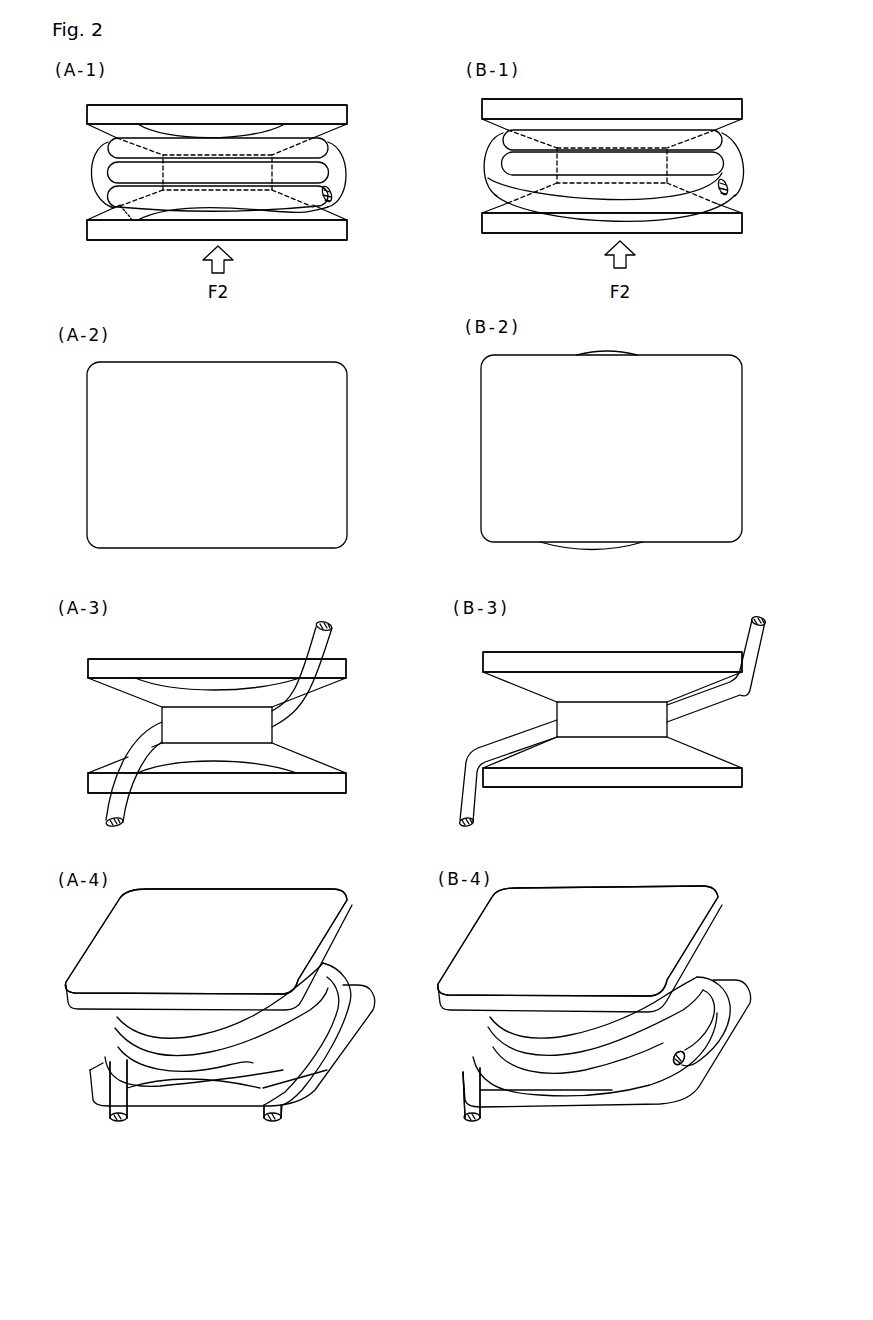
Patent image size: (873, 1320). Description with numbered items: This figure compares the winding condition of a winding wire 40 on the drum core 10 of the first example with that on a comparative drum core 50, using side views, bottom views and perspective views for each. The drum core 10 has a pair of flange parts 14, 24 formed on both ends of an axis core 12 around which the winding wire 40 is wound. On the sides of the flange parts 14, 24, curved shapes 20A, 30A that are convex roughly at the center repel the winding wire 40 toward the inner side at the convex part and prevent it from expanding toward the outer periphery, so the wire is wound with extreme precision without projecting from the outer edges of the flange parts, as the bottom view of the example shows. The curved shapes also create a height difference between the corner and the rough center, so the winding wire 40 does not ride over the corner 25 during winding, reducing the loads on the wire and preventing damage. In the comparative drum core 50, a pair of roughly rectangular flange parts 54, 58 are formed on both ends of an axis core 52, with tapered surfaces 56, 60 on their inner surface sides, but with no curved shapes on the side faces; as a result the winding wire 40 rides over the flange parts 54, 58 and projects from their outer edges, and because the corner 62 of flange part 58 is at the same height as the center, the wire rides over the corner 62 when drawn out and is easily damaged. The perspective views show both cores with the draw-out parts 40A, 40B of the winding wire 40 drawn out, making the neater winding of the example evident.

The drum core 10 is at (349, 90).
The axis core 12 is at (275, 737).
The flange part 14 is at (265, 93).
The curved shape 20A is at (192, 136).
The flange part 24 is at (278, 252).
The corner 25 is at (103, 217).
The curved shape 30A is at (188, 232).
The winding wire 40 is at (96, 162).
The draw-out part 40A is at (120, 1121).
The draw-out part 40B is at (274, 1121).
The drum core 50 is at (739, 85).
The axis core 52 is at (700, 165).
The flange part 54 is at (655, 91).
The tapered surface 56 is at (503, 149).
The flange part 58 is at (673, 246).
The tapered surface 60 is at (497, 210).
The corner 62 is at (738, 215).